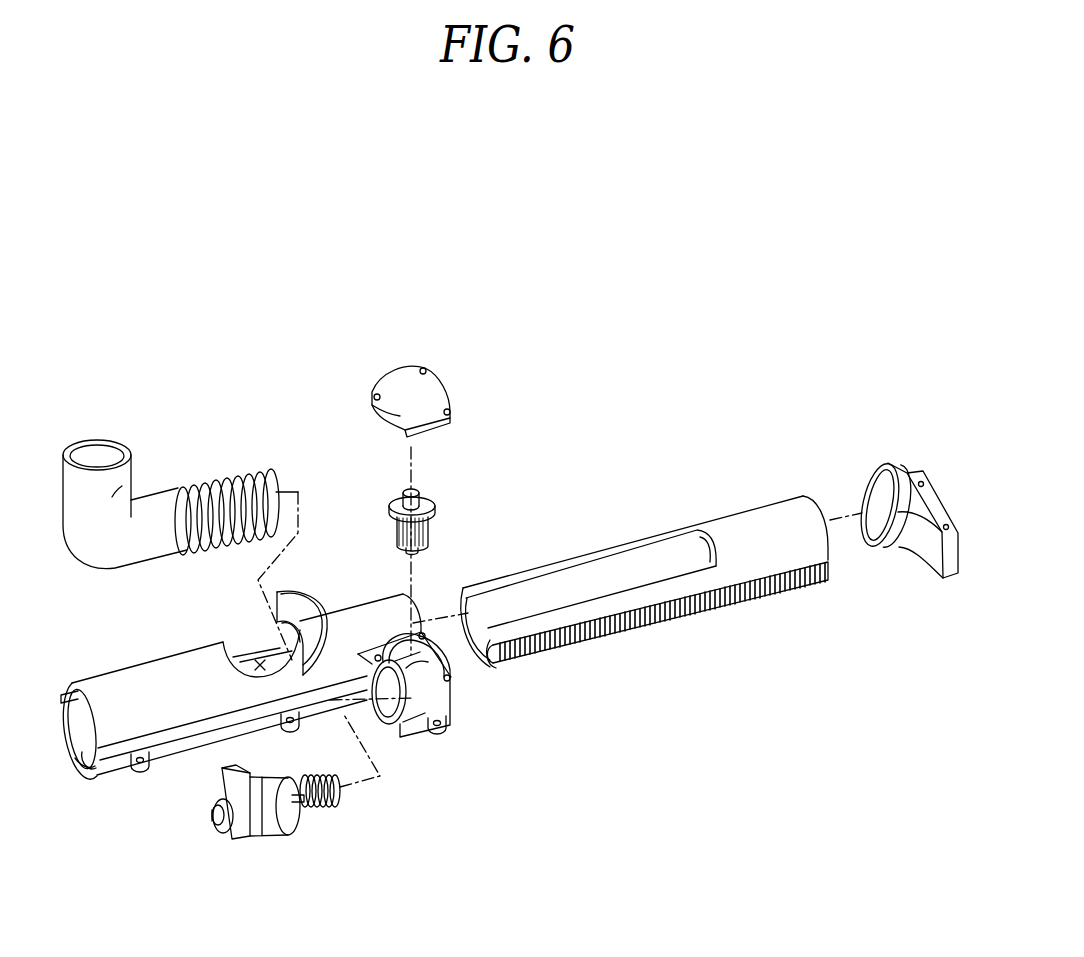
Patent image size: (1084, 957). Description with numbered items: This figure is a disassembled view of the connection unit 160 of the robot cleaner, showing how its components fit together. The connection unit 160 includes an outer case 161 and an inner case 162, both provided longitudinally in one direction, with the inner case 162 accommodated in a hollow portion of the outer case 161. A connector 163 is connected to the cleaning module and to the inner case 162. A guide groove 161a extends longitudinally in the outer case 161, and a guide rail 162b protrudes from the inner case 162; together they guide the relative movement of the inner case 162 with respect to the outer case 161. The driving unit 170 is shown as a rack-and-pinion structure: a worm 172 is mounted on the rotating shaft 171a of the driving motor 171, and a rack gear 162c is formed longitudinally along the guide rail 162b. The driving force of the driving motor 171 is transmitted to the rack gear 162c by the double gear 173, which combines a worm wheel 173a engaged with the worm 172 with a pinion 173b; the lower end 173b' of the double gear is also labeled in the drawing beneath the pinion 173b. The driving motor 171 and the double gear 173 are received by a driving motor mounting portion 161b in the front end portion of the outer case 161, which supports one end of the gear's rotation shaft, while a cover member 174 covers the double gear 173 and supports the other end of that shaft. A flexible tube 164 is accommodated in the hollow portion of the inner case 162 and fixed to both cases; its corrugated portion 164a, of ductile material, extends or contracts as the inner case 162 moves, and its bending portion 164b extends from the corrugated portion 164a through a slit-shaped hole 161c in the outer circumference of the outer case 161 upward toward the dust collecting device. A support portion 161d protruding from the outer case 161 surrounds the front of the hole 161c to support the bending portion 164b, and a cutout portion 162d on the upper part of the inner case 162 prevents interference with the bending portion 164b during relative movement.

The connection unit 160 is at (666, 463).
The outer case 161 is at (115, 682).
The guide groove 161a is at (82, 768).
The driving motor mounting portion 161b is at (407, 712).
The hole 161c is at (230, 642).
The support portion 161d is at (305, 595).
The inner case 162 is at (755, 520).
The guide rail 162b is at (490, 670).
The rack gear 162c is at (600, 634).
The cutout portion 162d is at (612, 553).
The connector 163 is at (898, 480).
The flexible tube 164 is at (232, 352).
The corrugated portion 164a is at (225, 480).
The bending portion 164b is at (118, 490).
The driving unit 170 is at (352, 812).
The driving motor 171 is at (275, 822).
The rotating shaft 171a is at (300, 812).
The worm 172 is at (330, 808).
The double gear 173 is at (486, 506).
The worm wheel 173a is at (428, 528).
The pinion 173b is at (445, 502).
The filter lower cap 173b' is at (456, 553).
The cover member 174 is at (405, 378).